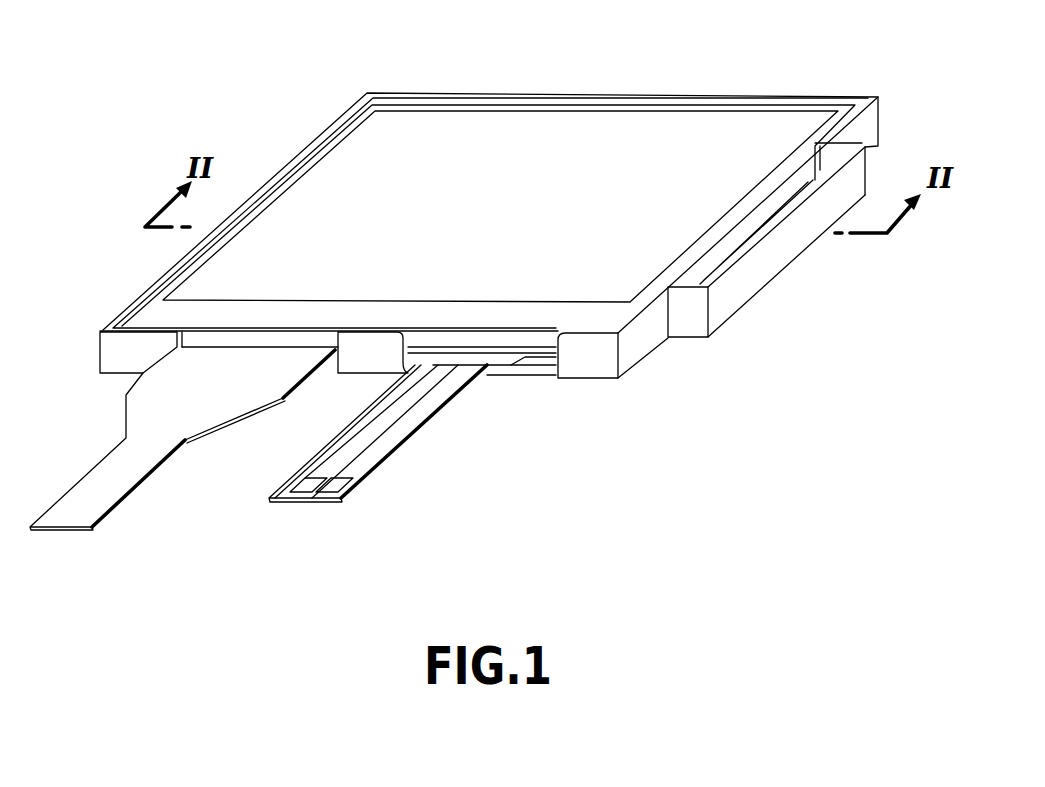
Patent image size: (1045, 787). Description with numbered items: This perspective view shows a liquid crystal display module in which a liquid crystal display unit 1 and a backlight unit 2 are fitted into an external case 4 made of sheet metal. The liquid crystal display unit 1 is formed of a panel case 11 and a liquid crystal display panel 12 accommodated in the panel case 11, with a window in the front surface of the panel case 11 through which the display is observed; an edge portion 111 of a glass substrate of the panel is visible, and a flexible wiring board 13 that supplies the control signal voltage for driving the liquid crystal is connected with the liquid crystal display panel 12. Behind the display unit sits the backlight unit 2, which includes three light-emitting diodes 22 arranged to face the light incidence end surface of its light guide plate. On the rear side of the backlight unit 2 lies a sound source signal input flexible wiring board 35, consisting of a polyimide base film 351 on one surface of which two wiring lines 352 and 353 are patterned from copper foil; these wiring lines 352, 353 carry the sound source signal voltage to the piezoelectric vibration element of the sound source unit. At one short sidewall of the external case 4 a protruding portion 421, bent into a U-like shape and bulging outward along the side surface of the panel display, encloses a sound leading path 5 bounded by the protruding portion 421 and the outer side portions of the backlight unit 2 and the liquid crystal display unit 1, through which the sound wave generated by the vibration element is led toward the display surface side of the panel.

The liquid crystal display unit 1 is at (490, 168).
The panel case 11 is at (425, 102).
The edge portion of substrate 111 is at (532, 108).
The liquid crystal display panel 12 is at (605, 148).
The flexible wiring board 13 is at (140, 422).
The backlight unit 2 is at (503, 416).
The light-emitting diodes 22 is at (542, 357).
The sound source signal input flexible wiring board 35 is at (341, 469).
The base film 351 is at (303, 503).
The wiring line 352 is at (348, 436).
The wiring line 353 is at (368, 447).
The external case 4 is at (489, 298).
The protruding portion 421 is at (740, 283).
The sound leading path 5 is at (832, 160).